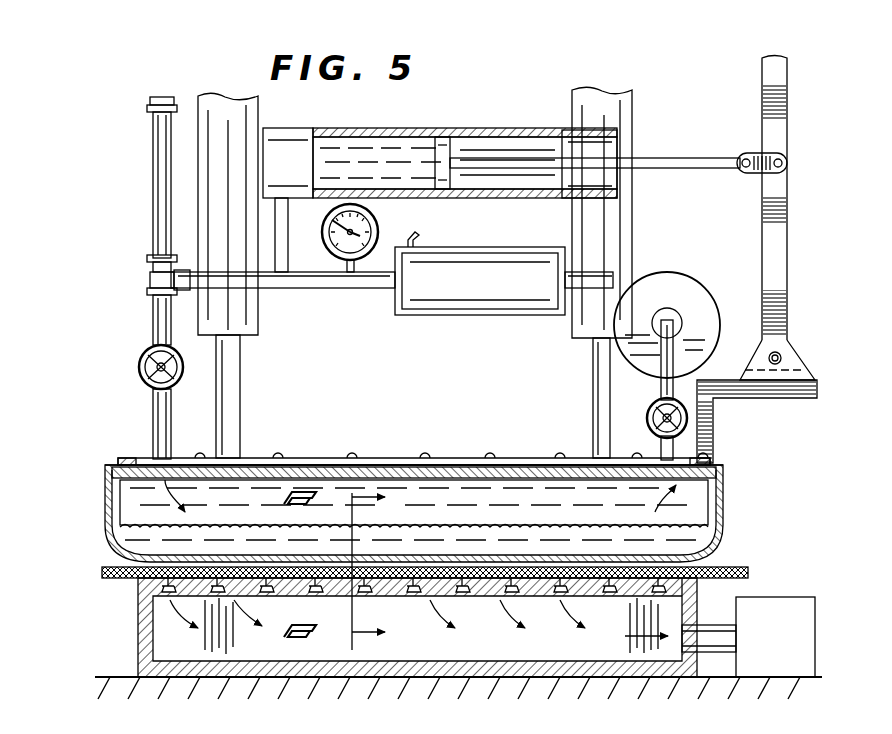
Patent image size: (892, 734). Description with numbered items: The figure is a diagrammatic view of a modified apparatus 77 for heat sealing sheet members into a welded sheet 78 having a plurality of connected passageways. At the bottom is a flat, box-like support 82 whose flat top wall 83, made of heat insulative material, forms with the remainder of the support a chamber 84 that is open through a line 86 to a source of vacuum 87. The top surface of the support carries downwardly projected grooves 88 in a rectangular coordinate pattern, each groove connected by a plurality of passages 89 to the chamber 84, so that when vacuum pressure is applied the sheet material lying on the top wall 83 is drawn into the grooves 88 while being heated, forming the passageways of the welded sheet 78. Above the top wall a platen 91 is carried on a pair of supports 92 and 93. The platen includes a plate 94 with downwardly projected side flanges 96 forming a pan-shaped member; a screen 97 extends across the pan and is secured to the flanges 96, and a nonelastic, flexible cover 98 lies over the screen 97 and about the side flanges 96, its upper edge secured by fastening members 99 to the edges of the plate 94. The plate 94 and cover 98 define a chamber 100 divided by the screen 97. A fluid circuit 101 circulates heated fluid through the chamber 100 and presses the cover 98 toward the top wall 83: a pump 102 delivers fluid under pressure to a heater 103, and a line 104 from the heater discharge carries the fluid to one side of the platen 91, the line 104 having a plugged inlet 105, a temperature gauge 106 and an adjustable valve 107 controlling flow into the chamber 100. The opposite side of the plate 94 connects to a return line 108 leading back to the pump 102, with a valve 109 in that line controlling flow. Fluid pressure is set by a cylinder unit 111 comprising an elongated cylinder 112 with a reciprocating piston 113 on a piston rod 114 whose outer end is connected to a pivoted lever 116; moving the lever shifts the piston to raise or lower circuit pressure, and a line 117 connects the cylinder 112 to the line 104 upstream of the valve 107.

The modified apparatus 77 is at (128, 256).
The welded sheet 78 is at (740, 566).
The support 82 is at (138, 648).
The top wall 83 is at (155, 616).
The chamber 84 is at (480, 652).
The line 86 is at (716, 630).
The source of vacuum 87 is at (808, 598).
The grooves 88 is at (655, 603).
The passages 89 is at (548, 617).
The platen 91 is at (100, 475).
The support 92 is at (220, 180).
The support 93 is at (605, 370).
The plate 94 is at (500, 478).
The side flanges 96 is at (125, 508).
The screen 97 is at (140, 530).
The cover 98 is at (672, 566).
The fastening members 99 is at (122, 458).
The chamber 100 is at (392, 478).
The fluid circuit 101 is at (690, 274).
The pump 102 is at (735, 294).
The heater 103 is at (500, 315).
The line 104 is at (268, 280).
The plugged inlet 105 is at (153, 140).
The temperature gauge 106 is at (372, 217).
The valve 107 is at (138, 368).
The return line 108 is at (690, 356).
The valve 109 is at (645, 418).
The cylinder unit 111 is at (686, 90).
The cylinder 112 is at (378, 128).
The piston 113 is at (452, 145).
The piston rod 114 is at (665, 170).
The pivoted lever 116 is at (762, 118).
The line 117 is at (290, 240).